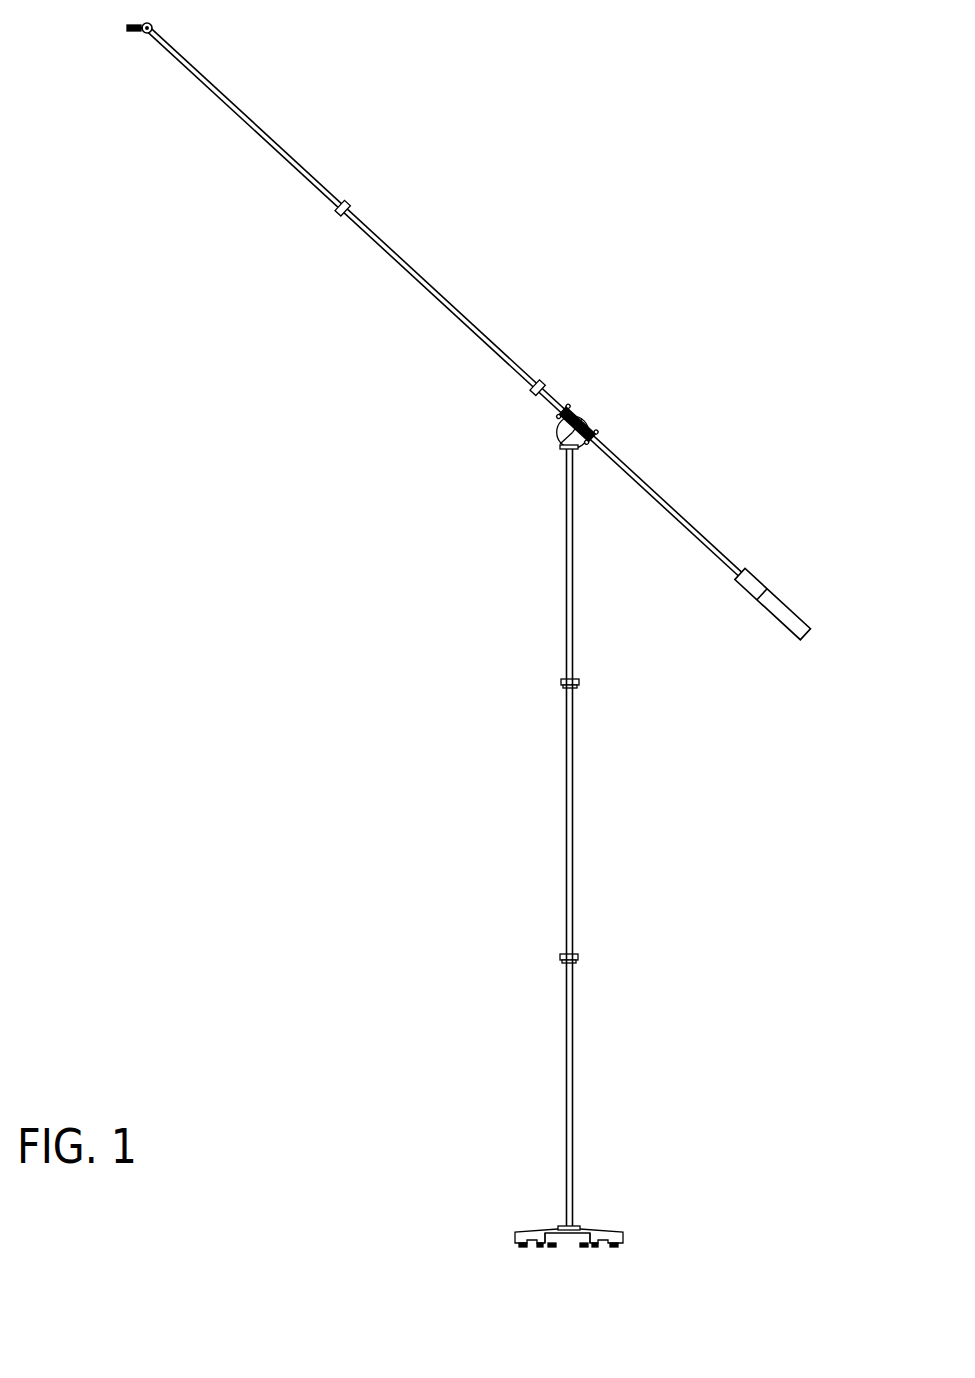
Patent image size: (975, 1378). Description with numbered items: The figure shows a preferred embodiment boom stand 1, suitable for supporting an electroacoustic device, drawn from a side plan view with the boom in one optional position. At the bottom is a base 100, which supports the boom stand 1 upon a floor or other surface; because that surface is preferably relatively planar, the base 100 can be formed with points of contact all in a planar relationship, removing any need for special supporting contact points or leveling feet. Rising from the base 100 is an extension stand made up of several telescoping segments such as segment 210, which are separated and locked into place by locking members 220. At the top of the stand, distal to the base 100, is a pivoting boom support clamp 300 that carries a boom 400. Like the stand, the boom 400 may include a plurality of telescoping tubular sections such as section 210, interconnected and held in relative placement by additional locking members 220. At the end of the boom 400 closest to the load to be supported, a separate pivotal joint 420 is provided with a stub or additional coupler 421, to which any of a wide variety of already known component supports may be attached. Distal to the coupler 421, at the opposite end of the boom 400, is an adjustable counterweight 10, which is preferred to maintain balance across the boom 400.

The boom stand 1 is at (647, 106).
The adjustable counterweight 10 is at (777, 578).
The base 100 is at (624, 1228).
The segment 210 is at (494, 352).
The locking member 220 is at (337, 212).
The pivoting boom support clamp 300 is at (587, 416).
The boom 400 is at (410, 282).
The pivotal joint 420 is at (154, 23).
The coupler 421 is at (127, 28).